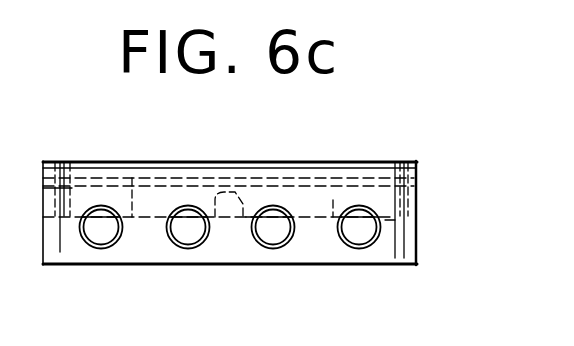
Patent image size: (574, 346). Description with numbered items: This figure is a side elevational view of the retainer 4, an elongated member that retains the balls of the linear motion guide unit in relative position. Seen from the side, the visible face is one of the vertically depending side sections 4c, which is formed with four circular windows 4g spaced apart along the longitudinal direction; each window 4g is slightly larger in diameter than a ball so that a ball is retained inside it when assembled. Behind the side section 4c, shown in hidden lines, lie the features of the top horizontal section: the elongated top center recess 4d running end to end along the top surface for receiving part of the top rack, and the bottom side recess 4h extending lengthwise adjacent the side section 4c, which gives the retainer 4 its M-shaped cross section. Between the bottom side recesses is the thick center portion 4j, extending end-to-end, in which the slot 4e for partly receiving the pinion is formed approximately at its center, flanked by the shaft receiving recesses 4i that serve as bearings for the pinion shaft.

The retainer 4 is at (417, 167).
The side section 4c is at (407, 240).
The top center recess 4d is at (88, 177).
The slot 4e is at (333, 200).
The window 4g is at (365, 238).
The bottom side recess 4h is at (86, 184).
The shaft receiving recess 4i is at (244, 200).
The thick center portion 4j is at (404, 201).